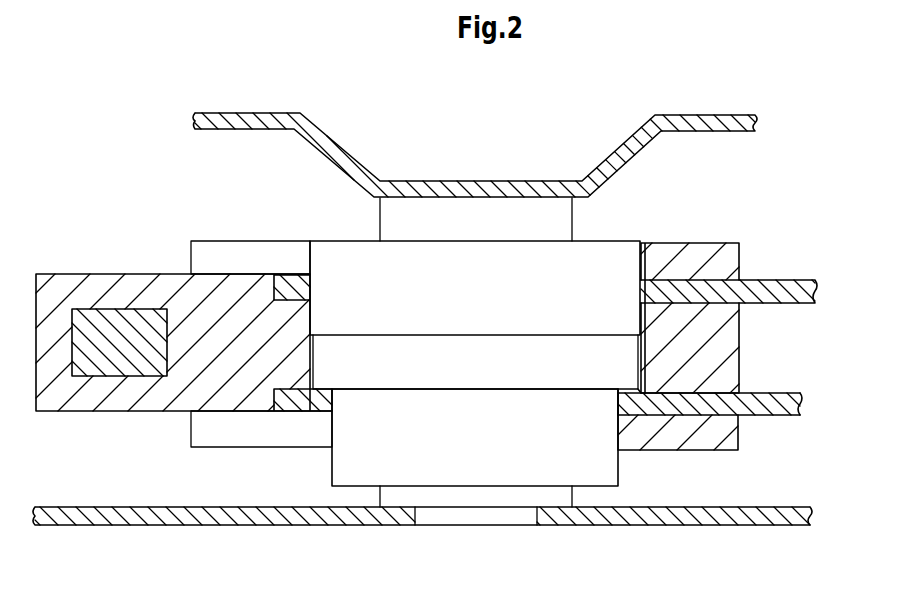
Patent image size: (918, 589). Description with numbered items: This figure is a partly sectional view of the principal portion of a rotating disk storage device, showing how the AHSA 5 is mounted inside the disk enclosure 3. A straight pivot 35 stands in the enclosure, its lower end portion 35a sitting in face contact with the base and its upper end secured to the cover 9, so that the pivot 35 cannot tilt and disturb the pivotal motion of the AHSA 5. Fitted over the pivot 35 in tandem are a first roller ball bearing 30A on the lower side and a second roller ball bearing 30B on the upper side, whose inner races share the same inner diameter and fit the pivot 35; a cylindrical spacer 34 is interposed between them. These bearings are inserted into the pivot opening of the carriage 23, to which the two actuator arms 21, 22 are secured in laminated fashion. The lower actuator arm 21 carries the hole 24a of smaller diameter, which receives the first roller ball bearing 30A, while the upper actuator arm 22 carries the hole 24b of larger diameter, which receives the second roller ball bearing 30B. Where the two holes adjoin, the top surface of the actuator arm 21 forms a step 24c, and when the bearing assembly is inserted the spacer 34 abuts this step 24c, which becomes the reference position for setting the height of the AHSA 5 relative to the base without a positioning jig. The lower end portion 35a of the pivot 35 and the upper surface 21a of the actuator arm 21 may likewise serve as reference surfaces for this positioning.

The cover 9 is at (698, 116).
The pivot 35 is at (543, 210).
The lower end portion 35a is at (560, 527).
The second roller ball bearing 30B is at (598, 240).
The first roller ball bearing 30A is at (618, 486).
The AHSA 5 is at (718, 205).
The spacer 34 is at (327, 364).
The hole 24a is at (618, 400).
The hole 24b is at (640, 288).
The step 24c is at (642, 367).
The actuator arm 22 is at (755, 287).
The actuator arm 21 is at (753, 393).
The upper surface 21a is at (793, 393).
The carriage 23 is at (740, 431).
The disk enclosure 3 is at (760, 507).